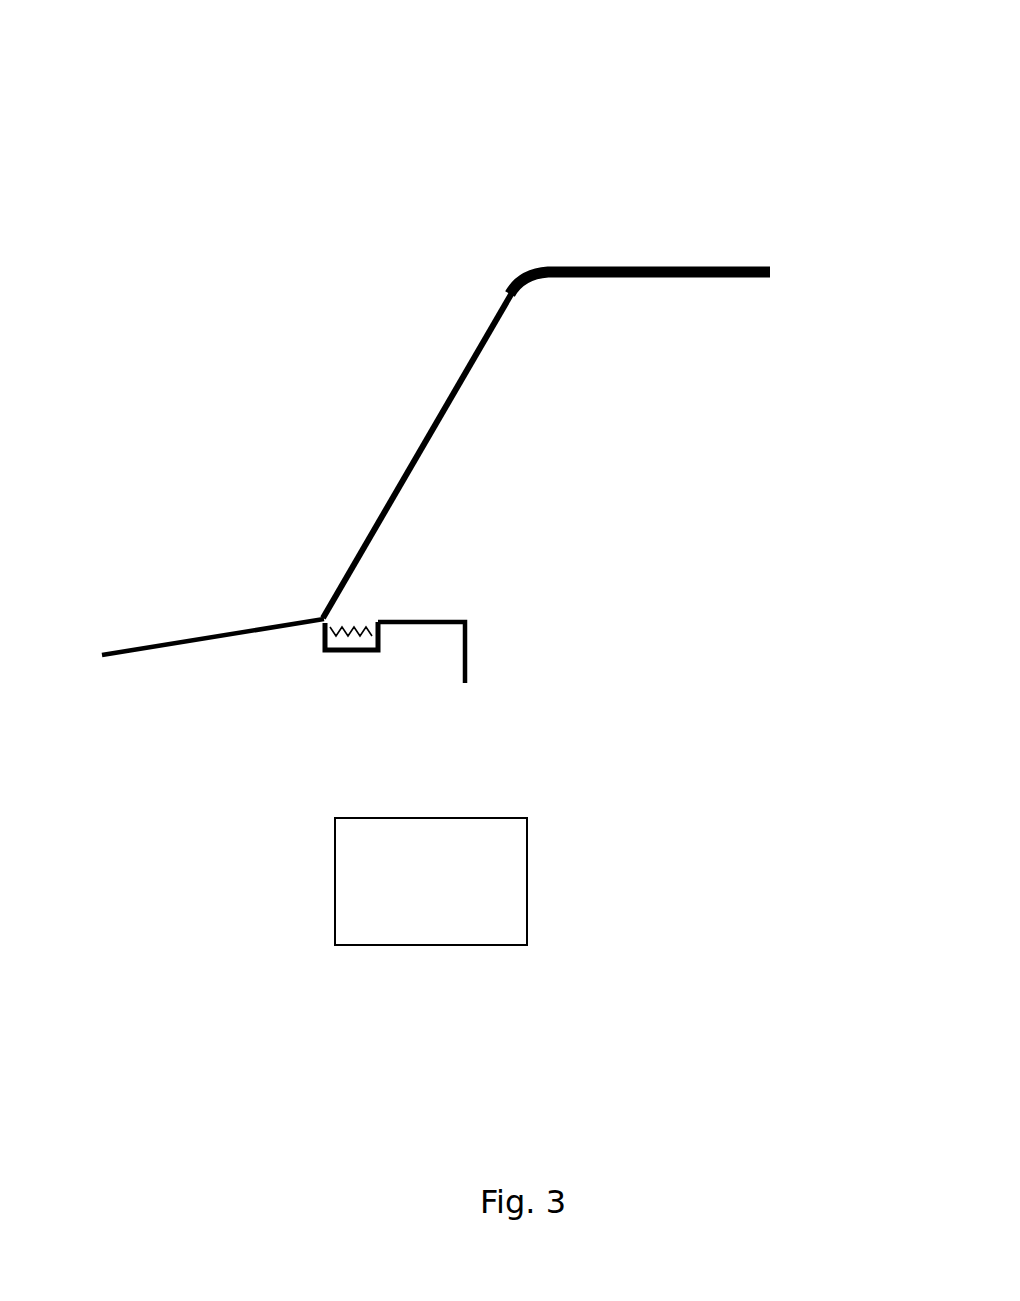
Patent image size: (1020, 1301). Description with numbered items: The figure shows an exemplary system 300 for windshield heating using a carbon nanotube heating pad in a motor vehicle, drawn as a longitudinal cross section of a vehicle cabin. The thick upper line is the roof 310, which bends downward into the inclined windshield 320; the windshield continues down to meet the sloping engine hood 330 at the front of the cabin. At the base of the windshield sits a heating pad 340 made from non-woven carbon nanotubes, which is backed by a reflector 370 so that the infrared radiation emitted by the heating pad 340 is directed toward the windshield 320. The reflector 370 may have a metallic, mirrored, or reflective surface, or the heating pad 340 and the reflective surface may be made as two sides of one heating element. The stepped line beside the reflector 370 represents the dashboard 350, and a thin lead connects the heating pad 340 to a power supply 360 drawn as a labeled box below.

The system 300 is at (479, 34).
The roof 310 is at (705, 253).
The windshield 320 is at (433, 394).
The engine hood 330 is at (131, 631).
The heating pad 340 is at (366, 612).
The dashboard 350 is at (486, 651).
The power supply 360 is at (417, 785).
The reflector 370 is at (374, 673).